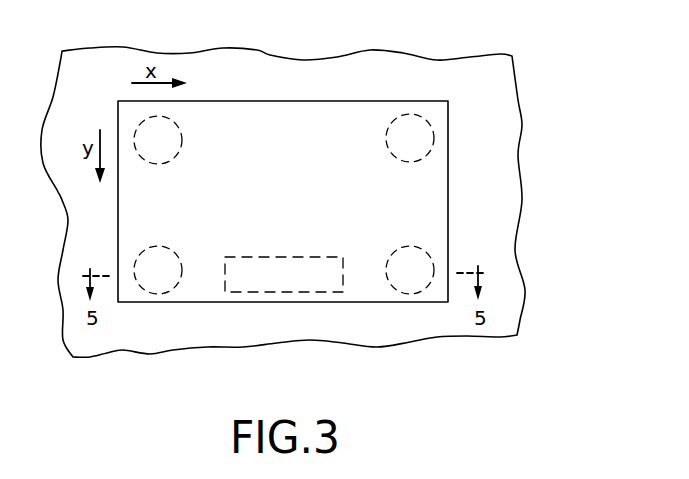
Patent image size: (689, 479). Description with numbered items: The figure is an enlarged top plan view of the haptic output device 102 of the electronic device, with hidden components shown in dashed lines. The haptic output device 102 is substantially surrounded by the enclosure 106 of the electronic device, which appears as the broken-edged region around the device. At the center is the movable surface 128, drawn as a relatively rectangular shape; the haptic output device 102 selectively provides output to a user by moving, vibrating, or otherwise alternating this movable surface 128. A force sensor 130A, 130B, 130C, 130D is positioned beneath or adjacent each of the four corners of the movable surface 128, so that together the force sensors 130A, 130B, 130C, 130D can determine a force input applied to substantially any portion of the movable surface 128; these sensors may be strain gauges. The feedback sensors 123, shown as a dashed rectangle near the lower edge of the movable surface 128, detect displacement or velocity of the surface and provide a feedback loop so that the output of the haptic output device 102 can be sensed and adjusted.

The haptic output device 102 is at (476, 113).
The enclosure 106 is at (497, 155).
The movable surface 128 is at (440, 213).
The feedback sensors 123 is at (283, 285).
The force sensor 130A is at (158, 285).
The force sensor 130B is at (410, 282).
The force sensor 130C is at (172, 135).
The force sensor 130D is at (417, 128).